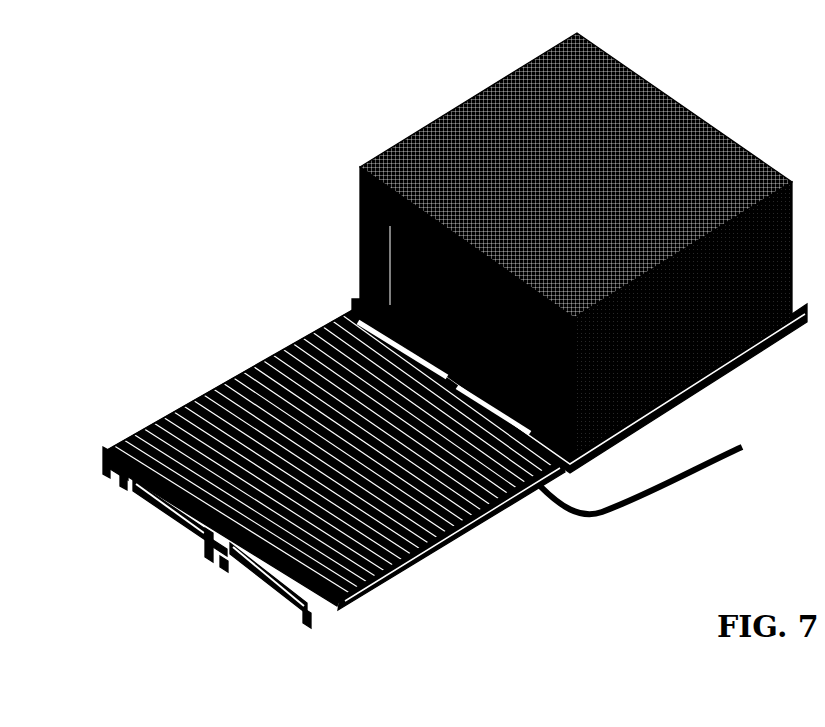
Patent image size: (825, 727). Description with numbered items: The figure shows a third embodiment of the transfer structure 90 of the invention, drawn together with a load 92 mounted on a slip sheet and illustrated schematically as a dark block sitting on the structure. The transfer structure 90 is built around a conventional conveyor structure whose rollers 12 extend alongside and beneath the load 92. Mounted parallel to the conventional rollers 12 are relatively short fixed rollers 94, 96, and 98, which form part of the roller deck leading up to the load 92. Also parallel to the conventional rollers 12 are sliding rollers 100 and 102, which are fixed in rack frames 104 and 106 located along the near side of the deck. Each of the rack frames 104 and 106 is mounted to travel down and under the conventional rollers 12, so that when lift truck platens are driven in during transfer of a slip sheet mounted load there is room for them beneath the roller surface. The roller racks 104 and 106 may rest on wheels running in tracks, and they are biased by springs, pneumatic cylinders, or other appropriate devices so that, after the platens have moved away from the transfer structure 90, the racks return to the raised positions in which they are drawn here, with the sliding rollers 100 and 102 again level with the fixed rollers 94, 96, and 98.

The rollers 12 is at (567, 462).
The transfer structure 90 is at (228, 364).
The load 92 is at (412, 137).
The fixed roller 94 is at (457, 540).
The fixed roller 96 is at (192, 534).
The fixed roller 98 is at (208, 393).
The sliding roller 100 is at (167, 519).
The sliding roller 102 is at (267, 583).
The rack frame 104 is at (150, 505).
The rack frame 106 is at (243, 568).